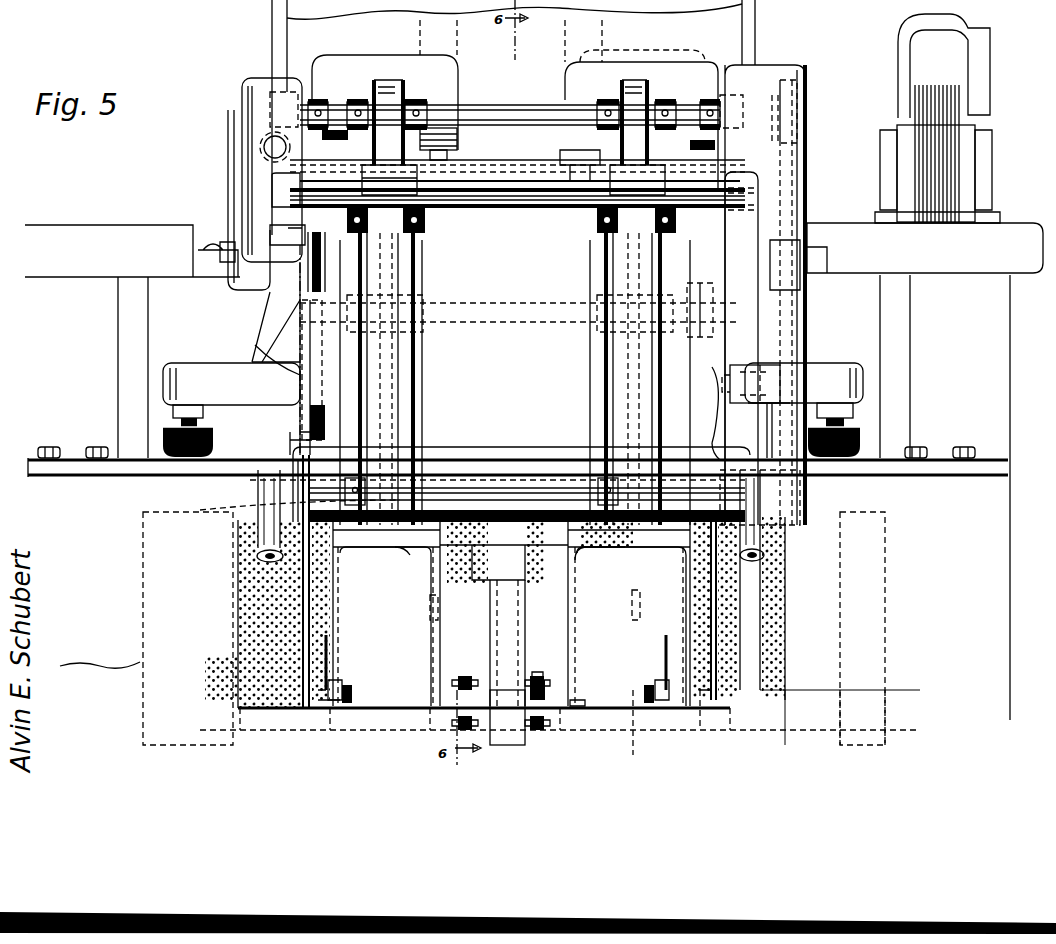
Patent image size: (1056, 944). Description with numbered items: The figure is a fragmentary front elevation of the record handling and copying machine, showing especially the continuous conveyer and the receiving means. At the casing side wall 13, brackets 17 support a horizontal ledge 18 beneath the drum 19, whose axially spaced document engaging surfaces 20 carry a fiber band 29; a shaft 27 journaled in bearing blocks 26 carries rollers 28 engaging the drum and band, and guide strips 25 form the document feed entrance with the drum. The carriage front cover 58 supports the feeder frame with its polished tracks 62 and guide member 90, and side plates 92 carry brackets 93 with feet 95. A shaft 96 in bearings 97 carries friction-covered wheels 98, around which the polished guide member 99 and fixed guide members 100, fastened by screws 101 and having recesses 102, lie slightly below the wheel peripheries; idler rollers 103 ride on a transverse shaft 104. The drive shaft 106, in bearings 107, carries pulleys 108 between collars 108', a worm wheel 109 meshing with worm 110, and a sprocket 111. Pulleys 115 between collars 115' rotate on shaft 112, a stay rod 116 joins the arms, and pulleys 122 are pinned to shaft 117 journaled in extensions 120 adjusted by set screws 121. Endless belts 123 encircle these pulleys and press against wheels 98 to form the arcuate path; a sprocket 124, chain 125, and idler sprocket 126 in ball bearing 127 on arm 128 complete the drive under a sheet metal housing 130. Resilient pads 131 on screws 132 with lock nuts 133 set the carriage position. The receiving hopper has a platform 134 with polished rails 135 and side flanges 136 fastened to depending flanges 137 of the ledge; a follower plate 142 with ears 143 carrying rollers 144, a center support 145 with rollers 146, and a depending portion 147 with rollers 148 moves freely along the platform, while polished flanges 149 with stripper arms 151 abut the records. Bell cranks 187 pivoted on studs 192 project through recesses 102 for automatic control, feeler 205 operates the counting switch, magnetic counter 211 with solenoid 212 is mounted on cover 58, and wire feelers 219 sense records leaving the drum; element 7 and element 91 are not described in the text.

The pipe 7 is at (312, 462).
The side wall 13 is at (1000, 318).
The brackets 17 is at (1000, 493).
The horizontal ledge 18 is at (995, 447).
The drum 19 is at (248, 612).
The document engaging surfaces 20 is at (575, 478).
The guide strips 25 is at (615, 548).
The bearing blocks 26 is at (240, 498).
The shaft 27 is at (322, 439).
The rollers 28 is at (240, 525).
The fiber band 29 is at (503, 580).
The front cover 58 is at (985, 232).
The polished tracks 62 is at (515, 122).
The guide member 90 is at (470, 138).
The bracket 91 is at (585, 180).
The side plates 92 is at (295, 88).
The bracket 93 is at (822, 312).
The foot 95 is at (855, 370).
The shaft 96 is at (485, 305).
The bearings 97 is at (698, 283).
The wheels 98 is at (628, 262).
The polished guide member 99 is at (532, 165).
The polished fixed guide members 100 is at (825, 330).
The screws 101 is at (718, 390).
The recesses 102 is at (300, 437).
The idler rollers 103 is at (660, 160).
The transverse shaft 104 is at (468, 162).
The shaft 106 is at (530, 108).
The bearings 107 is at (720, 128).
The pulleys 108 is at (511, 75).
The collars 108' is at (514, 78).
The worm wheel 109 is at (236, 84).
The worm 110 is at (264, 150).
The sprocket 111 is at (812, 72).
The shaft 112 is at (528, 210).
The pulleys 115 is at (511, 245).
The collars 115' is at (491, 194).
The stay rod 116 is at (485, 210).
The shaft 117 is at (440, 478).
The extensions 120 is at (800, 545).
The set screws 121 is at (800, 572).
The pulleys 122 is at (560, 470).
The endless belts 123 is at (618, 362).
The sprocket 124 is at (800, 488).
The endless chain 125 is at (790, 192).
The idler sprocket 126 is at (808, 352).
The ball bearing 127 is at (762, 430).
The arm 128 is at (808, 292).
The sheet metal housing 130 is at (808, 125).
The resilient pads 131 is at (860, 438).
The screws 132 is at (844, 424).
The lock nuts 133 is at (853, 412).
The platform 134 is at (583, 710).
The polished rails 135 is at (598, 700).
The side flanges 136 is at (710, 610).
The depending flanges 137 is at (700, 630).
The follower plate 142 is at (511, 611).
The ears 143 is at (665, 652).
The rollers 144 is at (660, 675).
The center support 145 is at (525, 612).
The rollers 146 is at (540, 680).
The depending portion 147 is at (512, 745).
The rollers 148 is at (470, 735).
The polished flanges 149 is at (662, 547).
The stripper arms 151 is at (632, 600).
The bell cranks 187 is at (318, 418).
The studs 192 is at (272, 232).
The spring wire feeler 205 is at (712, 92).
The magnetic counter 211 is at (978, 155).
The solenoid 212 is at (975, 70).
The wire feelers 219 is at (640, 752).